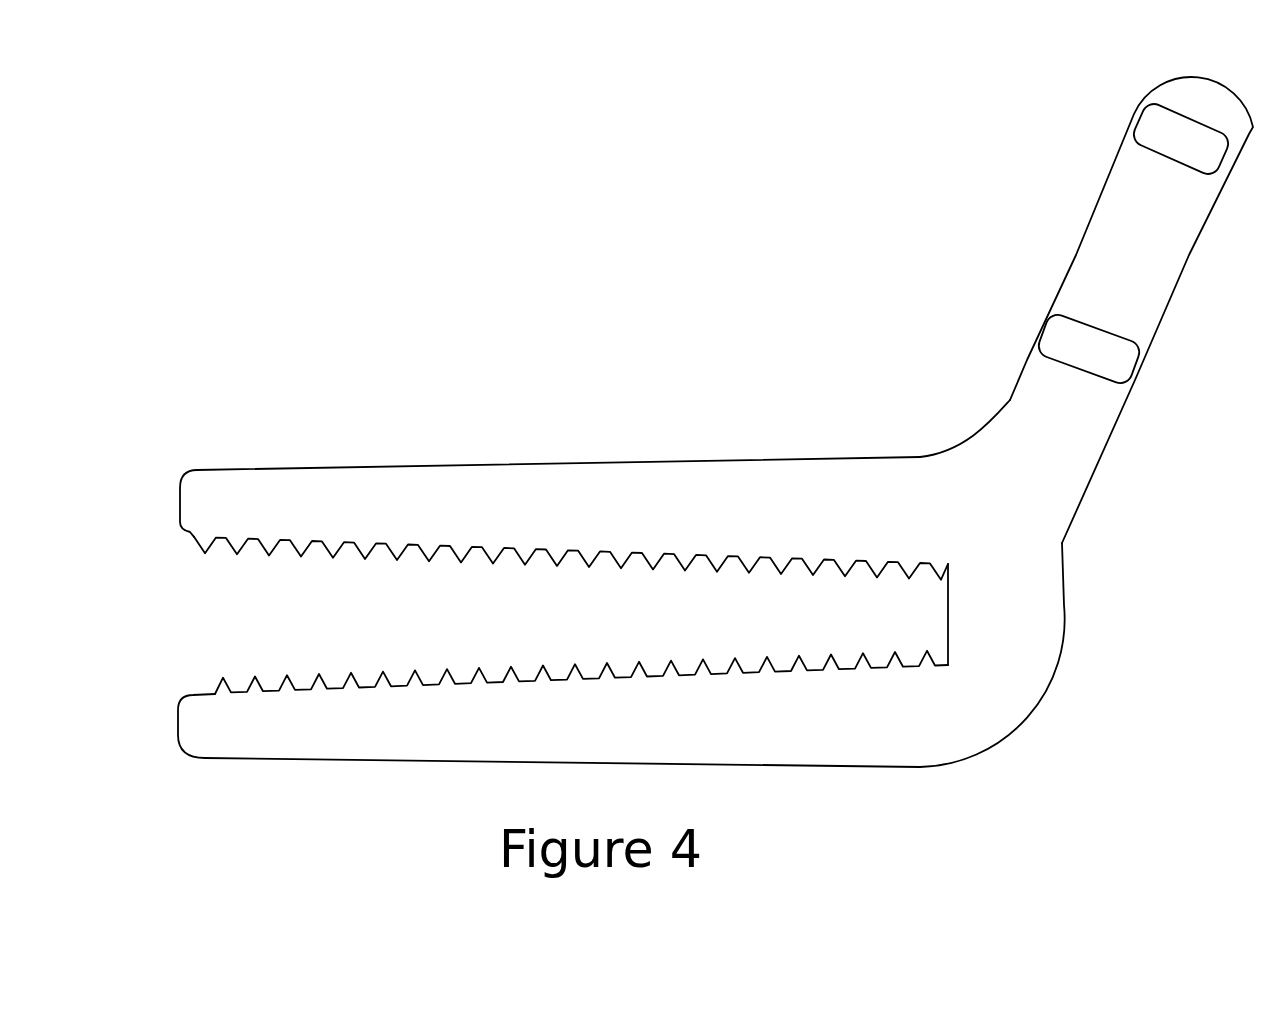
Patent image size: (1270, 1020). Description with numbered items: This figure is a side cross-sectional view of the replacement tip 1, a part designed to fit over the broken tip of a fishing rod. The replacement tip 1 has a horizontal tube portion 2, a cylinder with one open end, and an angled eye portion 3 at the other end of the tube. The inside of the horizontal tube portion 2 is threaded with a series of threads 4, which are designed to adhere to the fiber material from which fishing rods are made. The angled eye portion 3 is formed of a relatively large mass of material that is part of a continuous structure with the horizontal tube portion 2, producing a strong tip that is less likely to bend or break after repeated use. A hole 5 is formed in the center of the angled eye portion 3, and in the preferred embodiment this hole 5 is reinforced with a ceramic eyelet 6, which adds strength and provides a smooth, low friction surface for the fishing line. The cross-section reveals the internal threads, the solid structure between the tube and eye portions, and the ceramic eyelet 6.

The replacement tip 1 is at (728, 293).
The horizontal tube portion 2 is at (592, 440).
The angled eye portion 3 is at (1028, 392).
The threads 4 is at (637, 563).
The hole 5 is at (1122, 218).
The ceramic eyelet 6 is at (1132, 118).